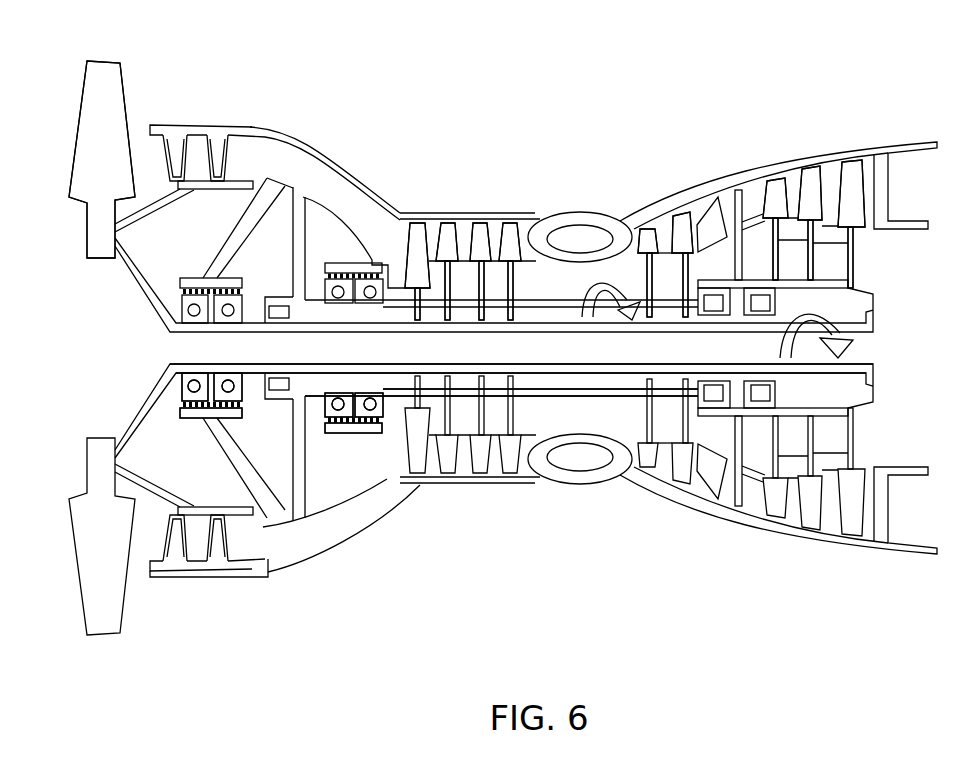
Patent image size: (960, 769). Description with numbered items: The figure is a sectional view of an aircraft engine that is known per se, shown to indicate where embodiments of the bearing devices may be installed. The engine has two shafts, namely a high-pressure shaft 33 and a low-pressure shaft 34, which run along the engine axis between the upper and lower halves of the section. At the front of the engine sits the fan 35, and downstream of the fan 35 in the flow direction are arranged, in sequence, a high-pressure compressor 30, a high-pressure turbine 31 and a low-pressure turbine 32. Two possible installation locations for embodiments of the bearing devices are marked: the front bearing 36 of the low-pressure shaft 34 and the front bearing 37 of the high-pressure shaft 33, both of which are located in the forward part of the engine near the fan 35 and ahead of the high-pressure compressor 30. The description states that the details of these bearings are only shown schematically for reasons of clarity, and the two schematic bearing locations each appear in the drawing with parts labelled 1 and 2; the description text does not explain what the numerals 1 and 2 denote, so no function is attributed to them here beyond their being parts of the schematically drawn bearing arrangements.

The first sealing element 1 is at (382, 403).
The second sealing element 2 is at (345, 412).
The high-pressure compressor 30 is at (447, 233).
The high-pressure turbine 31 is at (682, 222).
The low-pressure turbine 32 is at (848, 177).
The high-pressure shaft 33 is at (730, 372).
The low-pressure shaft 34 is at (622, 393).
The fan 35 is at (109, 87).
The front bearing of the low-pressure shaft 36 is at (226, 412).
The front bearing of the high-pressure shaft 37 is at (389, 423).